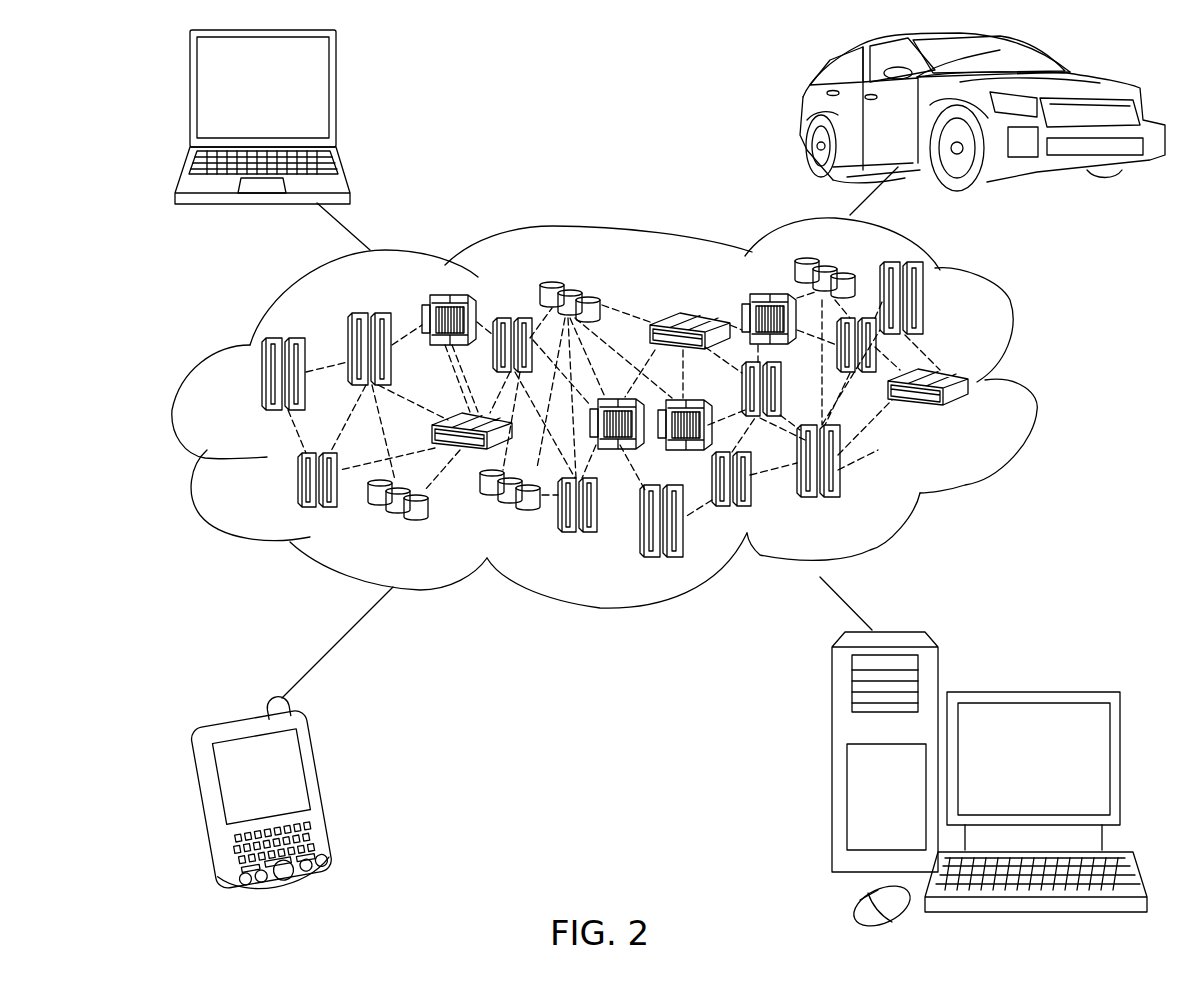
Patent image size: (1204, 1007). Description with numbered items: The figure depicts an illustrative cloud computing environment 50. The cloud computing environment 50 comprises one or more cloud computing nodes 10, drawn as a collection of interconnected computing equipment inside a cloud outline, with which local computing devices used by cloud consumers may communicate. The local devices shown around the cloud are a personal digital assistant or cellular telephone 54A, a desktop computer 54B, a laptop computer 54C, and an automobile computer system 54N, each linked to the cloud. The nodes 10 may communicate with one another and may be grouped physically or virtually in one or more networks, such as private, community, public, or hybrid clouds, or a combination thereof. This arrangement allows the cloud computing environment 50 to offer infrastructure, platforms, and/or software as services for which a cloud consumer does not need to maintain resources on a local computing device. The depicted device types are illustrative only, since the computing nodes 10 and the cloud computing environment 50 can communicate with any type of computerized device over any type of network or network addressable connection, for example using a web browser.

The cloud computing environment 50 is at (1030, 378).
The cloud computing nodes 10 is at (975, 418).
The personal digital assistant or cellular telephone 54A is at (322, 792).
The desktop computer 54B is at (1030, 692).
The laptop computer 54C is at (336, 96).
The automobile computer system 54N is at (797, 110).